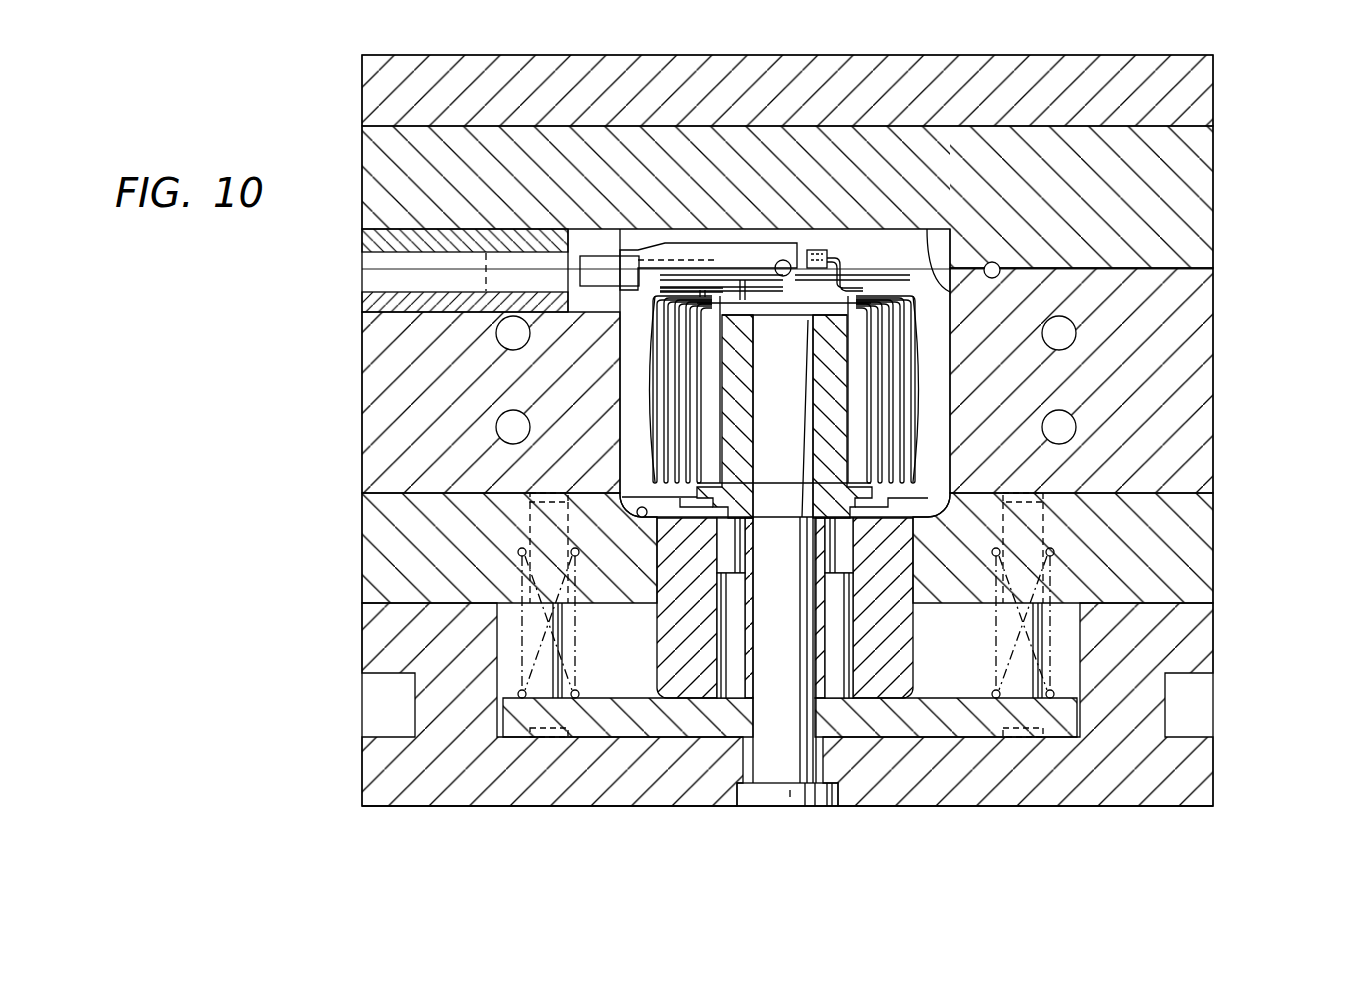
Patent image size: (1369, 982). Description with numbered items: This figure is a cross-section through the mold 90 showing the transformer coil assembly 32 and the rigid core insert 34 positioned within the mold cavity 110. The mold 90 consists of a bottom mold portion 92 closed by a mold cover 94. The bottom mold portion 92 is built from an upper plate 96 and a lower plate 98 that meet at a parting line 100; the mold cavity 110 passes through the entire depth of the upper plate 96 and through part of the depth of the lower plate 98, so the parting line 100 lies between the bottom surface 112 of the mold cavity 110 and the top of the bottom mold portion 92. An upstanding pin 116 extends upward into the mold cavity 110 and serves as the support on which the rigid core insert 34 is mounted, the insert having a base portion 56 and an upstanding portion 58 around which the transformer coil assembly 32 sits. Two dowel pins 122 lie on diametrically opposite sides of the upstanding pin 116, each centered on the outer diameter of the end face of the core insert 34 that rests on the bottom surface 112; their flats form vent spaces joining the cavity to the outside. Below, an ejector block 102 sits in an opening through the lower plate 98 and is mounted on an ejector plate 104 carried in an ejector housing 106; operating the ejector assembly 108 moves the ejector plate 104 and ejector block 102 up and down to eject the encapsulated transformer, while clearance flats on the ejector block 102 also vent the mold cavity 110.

The transformer coil assembly 32 is at (858, 300).
The rigid core insert 34 is at (736, 320).
The base portion 56 is at (625, 498).
The upstanding portion 58 is at (726, 388).
The mold 90 is at (1215, 140).
The bottom mold portion 92 is at (1215, 510).
The mold cover 94 is at (1215, 231).
The upper plate 96 is at (1200, 317).
The lower plate 98 is at (1192, 583).
The parting line 100 is at (1213, 480).
The ejector block 102 is at (867, 693).
The ejector plate 104 is at (1064, 727).
The ejector housing 106 is at (1205, 766).
The ejector assembly 108 is at (523, 652).
The mold cavity 110 is at (929, 252).
The bottom surface 112 is at (636, 514).
The upstanding pin 116 is at (762, 770).
The dowel pins 122 is at (843, 693).